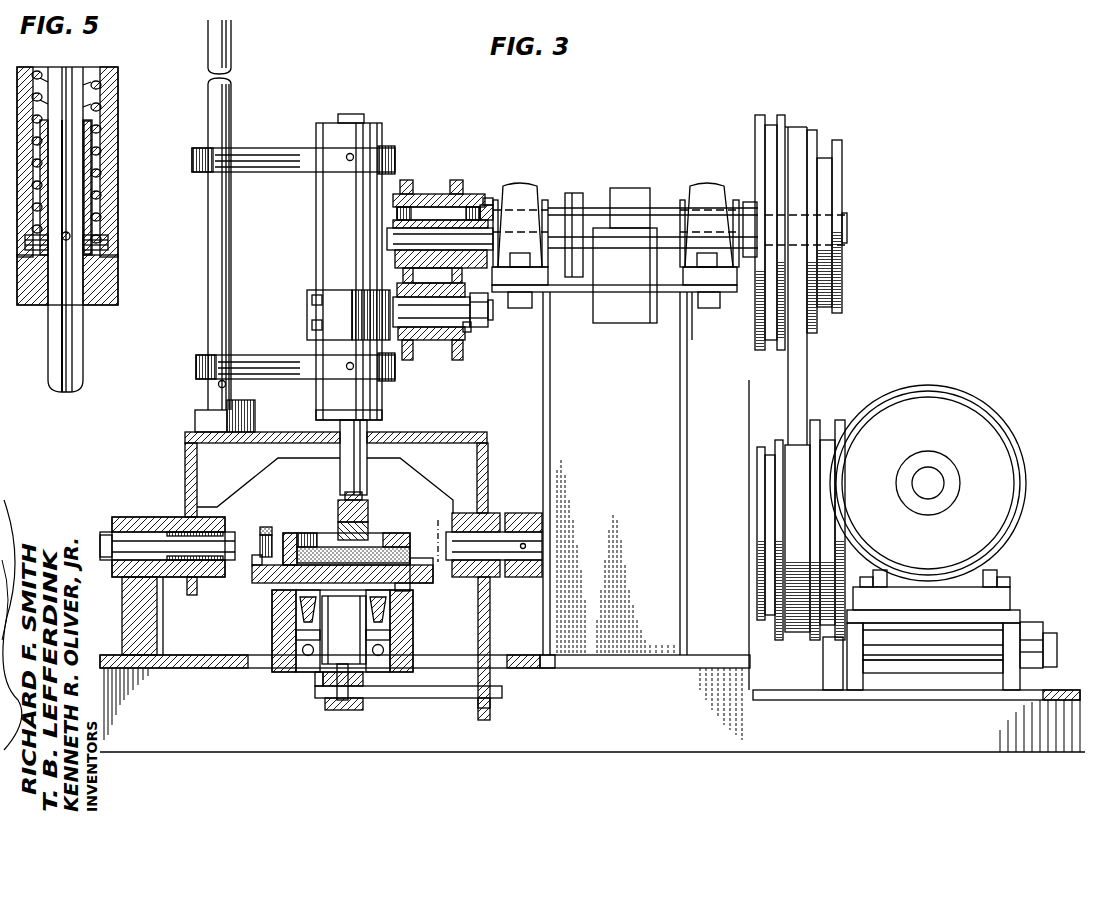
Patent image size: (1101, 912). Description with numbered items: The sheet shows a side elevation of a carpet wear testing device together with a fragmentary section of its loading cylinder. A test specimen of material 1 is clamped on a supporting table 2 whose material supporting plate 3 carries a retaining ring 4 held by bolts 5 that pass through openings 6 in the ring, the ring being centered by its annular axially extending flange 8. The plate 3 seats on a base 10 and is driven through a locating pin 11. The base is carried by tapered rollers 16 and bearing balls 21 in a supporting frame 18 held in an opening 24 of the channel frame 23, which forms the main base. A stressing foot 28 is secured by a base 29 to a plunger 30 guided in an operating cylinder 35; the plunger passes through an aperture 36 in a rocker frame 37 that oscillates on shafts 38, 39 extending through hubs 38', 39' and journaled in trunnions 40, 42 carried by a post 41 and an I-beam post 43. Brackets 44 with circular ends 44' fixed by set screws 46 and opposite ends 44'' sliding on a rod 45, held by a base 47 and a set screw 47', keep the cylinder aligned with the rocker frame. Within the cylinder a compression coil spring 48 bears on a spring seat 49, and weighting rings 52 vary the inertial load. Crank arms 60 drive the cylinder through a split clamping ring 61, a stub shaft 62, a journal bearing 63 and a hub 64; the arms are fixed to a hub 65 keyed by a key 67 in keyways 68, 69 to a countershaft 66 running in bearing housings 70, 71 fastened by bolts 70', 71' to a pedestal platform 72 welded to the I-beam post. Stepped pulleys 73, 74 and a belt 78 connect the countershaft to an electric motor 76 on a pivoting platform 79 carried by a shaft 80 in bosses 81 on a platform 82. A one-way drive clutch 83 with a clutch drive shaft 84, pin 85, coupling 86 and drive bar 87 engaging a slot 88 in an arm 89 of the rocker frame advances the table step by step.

In FIG. 3, the test specimen of material 1 is at (318, 545).
In FIG. 3, the supporting table 2 is at (246, 581).
In FIG. 3, the material supporting plate 3 is at (401, 583).
In FIG. 3, the retaining ring 4 is at (292, 533).
In FIG. 3, the bolts 5 is at (262, 530).
In FIG. 3, the base 10 is at (272, 585).
In FIG. 3, the locating pin 11 is at (441, 573).
In FIG. 3, the rollers 16 is at (410, 612).
In FIG. 3, the supporting frame 18 is at (412, 636).
In FIG. 3, the bearing balls 21 is at (410, 668).
In FIG. 3, the channel frame 23 is at (260, 752).
In FIG. 3, the opening 24 is at (257, 672).
In FIG. 3, the stressing foot 28 is at (347, 538).
In FIG. 3, the base 29 is at (346, 519).
In FIG. 3, the plunger 30 is at (348, 476).
In FIG. 3, the operating cylinder 35 is at (318, 213).
In FIG. 3, the aperture 36 is at (384, 426).
In FIG. 3, the rocker frame 37 is at (190, 473).
In FIG. 3, the shaft 38 is at (147, 546).
In FIG. 3, the hub 38' is at (184, 521).
In FIG. 3, the shaft 39 is at (479, 532).
In FIG. 3, the hub 39' is at (492, 524).
In FIG. 3, the trunnion 40 is at (130, 516).
In FIG. 3, the post 41 is at (130, 614).
In FIG. 3, the trunnion 42 is at (532, 509).
In FIG. 3, the I-beam post 43 is at (570, 430).
In FIG. 3, the brackets 44 is at (293, 249).
In FIG. 3, the circular ends 44' is at (401, 245).
In FIG. 3, the opposite ends 44'' is at (181, 263).
In FIG. 3, the rod 45 is at (210, 285).
In FIG. 3, the set screws 46 is at (347, 158).
In FIG. 3, the base 47 is at (200, 416).
In FIG. 3, the set screw 47' is at (187, 393).
In FIG. 5, the compression coil spring 48 is at (97, 119).
In FIG. 5, the spring seat 49 is at (104, 239).
In FIG. 5, the weighting rings 52 is at (87, 167).
In FIG. 3, the crank arms 60 is at (456, 180).
In FIG. 3, the split clamping ring 61 is at (362, 300).
In FIG. 3, the stub shaft 62 is at (476, 314).
In FIG. 3, the journal bearing 63 is at (446, 340).
In FIG. 3, the hub 64 is at (464, 345).
In FIG. 3, the hub 65 is at (438, 194).
In FIG. 3, the countershaft 66 is at (665, 212).
In FIG. 3, the key 67 is at (470, 207).
In FIG. 3, the keyway 68 is at (489, 205).
In FIG. 3, the keyway 69 is at (493, 212).
In FIG. 3, the bearing housing 70 is at (521, 210).
In FIG. 3, the bolts 70' is at (614, 302).
In FIG. 3, the bearing housing 71 is at (709, 208).
In FIG. 3, the bolts 71' is at (710, 302).
In FIG. 3, the pedestal platform 72 is at (693, 300).
In FIG. 3, the stepped pulley 73 is at (820, 128).
In FIG. 3, the stepped pulley 74 is at (832, 408).
In FIG. 3, the electric motor 76 is at (955, 400).
In FIG. 3, the belt 78 is at (800, 378).
In FIG. 3, the platform 79 is at (1012, 612).
In FIG. 3, the shaft 80 is at (1056, 645).
In FIG. 3, the bosses 81 is at (824, 678).
In FIG. 3, the platform 82 is at (1052, 709).
In FIG. 3, the one-way drive clutch 83 is at (330, 629).
In FIG. 3, the clutch drive shaft 84 is at (326, 673).
In FIG. 3, the pin 85 is at (328, 684).
In FIG. 3, the coupling 86 is at (333, 711).
In FIG. 3, the drive bar 87 is at (400, 699).
In FIG. 3, the slot 88 is at (491, 704).
In FIG. 3, the arm 89 is at (491, 634).
In FIG. 3, the openings 6 is at (752, 765).
In FIG. 3, the annular axially extending flange 8 is at (350, 158).